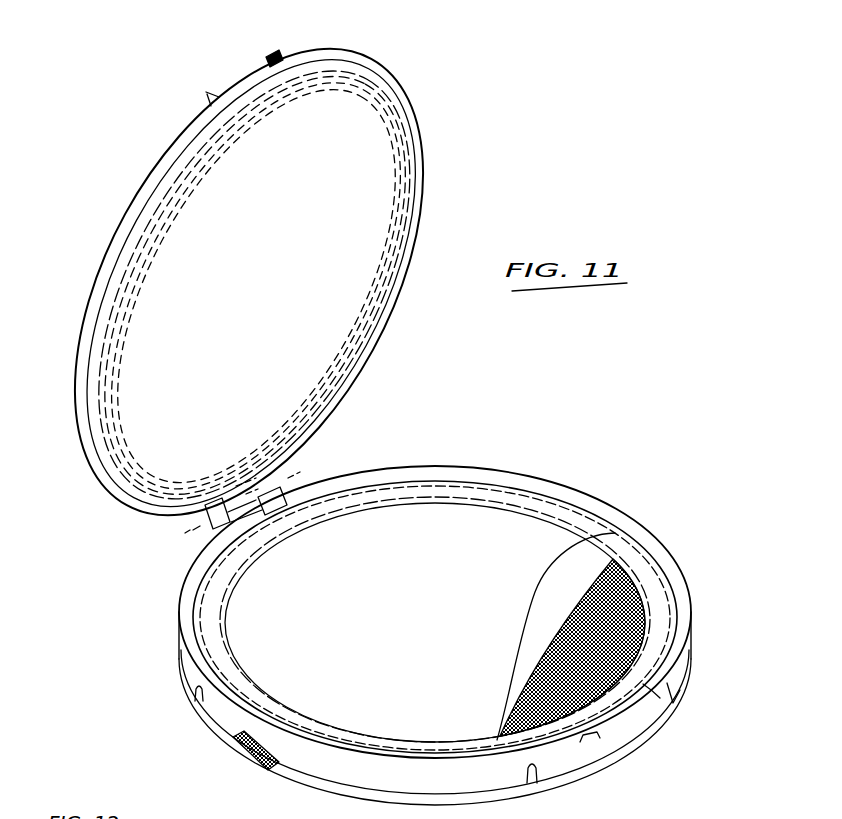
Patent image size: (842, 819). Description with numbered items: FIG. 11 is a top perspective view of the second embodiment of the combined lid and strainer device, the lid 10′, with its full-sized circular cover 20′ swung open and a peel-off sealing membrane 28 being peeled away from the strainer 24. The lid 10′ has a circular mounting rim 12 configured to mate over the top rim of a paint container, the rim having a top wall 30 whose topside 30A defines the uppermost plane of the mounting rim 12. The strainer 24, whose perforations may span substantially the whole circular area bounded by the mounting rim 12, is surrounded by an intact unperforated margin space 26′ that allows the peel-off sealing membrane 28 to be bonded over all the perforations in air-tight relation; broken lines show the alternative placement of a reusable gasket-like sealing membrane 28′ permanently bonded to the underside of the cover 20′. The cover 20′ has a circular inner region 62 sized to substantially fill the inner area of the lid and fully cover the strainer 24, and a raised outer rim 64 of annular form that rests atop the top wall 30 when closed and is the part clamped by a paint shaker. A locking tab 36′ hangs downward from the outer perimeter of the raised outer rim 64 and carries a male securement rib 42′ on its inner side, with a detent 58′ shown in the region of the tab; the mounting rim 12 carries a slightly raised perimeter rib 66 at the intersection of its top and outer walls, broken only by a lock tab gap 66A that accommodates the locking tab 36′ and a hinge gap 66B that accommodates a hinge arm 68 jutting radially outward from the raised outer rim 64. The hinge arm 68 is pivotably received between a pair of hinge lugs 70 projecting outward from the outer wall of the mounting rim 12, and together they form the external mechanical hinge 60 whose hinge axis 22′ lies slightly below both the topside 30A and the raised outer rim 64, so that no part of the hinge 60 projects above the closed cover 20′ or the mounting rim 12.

The lid 10′ is at (653, 437).
The mounting rim 12 is at (695, 630).
The cover 20′ is at (428, 147).
The hinge axis 22′ is at (183, 545).
The strainer 24 is at (640, 600).
The unperforated margin space 26′ is at (633, 585).
The peel-off sealing membrane 28 is at (597, 552).
The reusable gasket-like sealing membrane 28′ is at (416, 216).
The top wall 30 is at (488, 470).
The topside 30A is at (513, 483).
The locking tab 36′ is at (270, 52).
The male securement rib 42′ is at (213, 106).
The detent 58′ is at (597, 727).
The mechanical hinge 60 is at (207, 510).
The circular inner region 62 is at (290, 287).
The raised outer rim 64 is at (353, 54).
The perimeter rib 66 is at (667, 667).
The lock tab gap 66A is at (623, 706).
The hinge gap 66B is at (250, 507).
The hinge arm 68 is at (272, 480).
The hinge lugs 70 is at (207, 517).